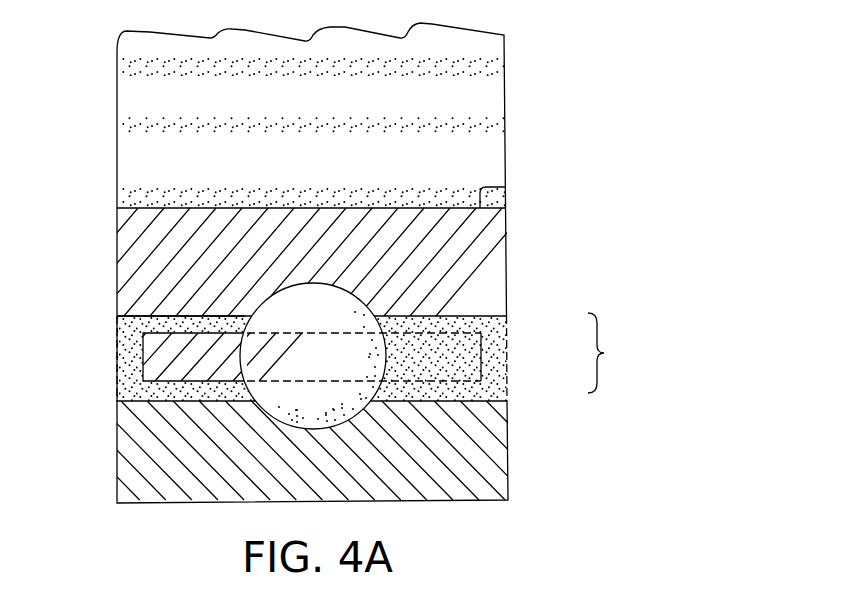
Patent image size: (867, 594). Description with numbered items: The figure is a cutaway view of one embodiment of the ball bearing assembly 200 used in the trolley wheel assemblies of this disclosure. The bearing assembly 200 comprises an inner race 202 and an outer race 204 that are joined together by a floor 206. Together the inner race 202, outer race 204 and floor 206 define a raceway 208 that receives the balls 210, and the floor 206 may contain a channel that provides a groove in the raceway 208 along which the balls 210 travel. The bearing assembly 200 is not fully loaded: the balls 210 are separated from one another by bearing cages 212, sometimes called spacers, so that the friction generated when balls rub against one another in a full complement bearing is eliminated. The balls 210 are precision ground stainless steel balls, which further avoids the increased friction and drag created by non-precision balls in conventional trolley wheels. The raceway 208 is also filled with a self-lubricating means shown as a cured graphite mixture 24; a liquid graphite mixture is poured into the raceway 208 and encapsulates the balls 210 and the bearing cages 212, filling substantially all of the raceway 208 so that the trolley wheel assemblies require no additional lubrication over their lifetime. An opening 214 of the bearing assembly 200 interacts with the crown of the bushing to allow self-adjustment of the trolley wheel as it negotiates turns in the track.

The ball bearing assembly 200 is at (634, 289).
The inner race 202 is at (506, 257).
The outer race 204 is at (508, 452).
The floor 206 is at (126, 330).
The raceway 208 is at (621, 353).
The balls 210 is at (305, 298).
The bearing cages 212 is at (160, 368).
The opening 214 is at (506, 187).
The cured graphite mixture 24 is at (118, 344).